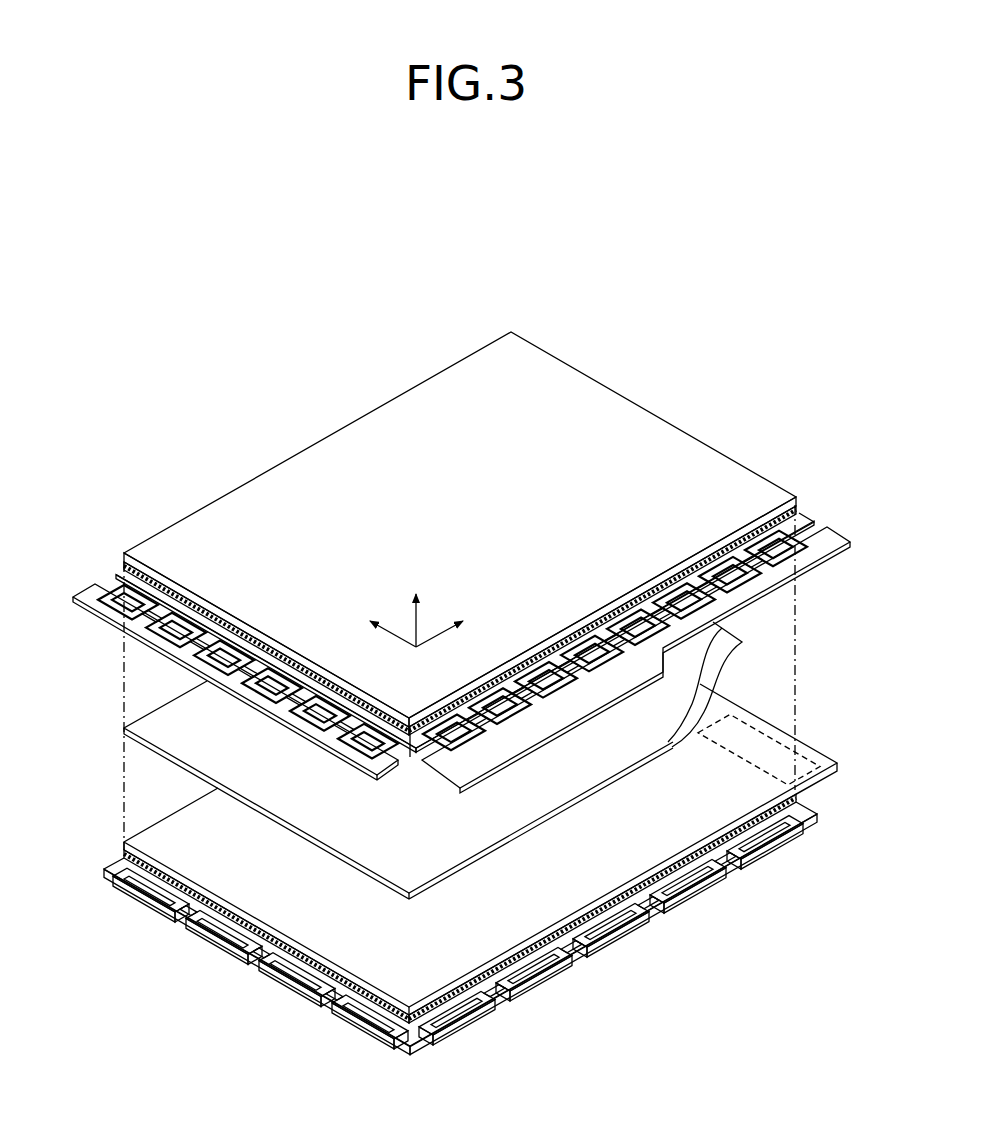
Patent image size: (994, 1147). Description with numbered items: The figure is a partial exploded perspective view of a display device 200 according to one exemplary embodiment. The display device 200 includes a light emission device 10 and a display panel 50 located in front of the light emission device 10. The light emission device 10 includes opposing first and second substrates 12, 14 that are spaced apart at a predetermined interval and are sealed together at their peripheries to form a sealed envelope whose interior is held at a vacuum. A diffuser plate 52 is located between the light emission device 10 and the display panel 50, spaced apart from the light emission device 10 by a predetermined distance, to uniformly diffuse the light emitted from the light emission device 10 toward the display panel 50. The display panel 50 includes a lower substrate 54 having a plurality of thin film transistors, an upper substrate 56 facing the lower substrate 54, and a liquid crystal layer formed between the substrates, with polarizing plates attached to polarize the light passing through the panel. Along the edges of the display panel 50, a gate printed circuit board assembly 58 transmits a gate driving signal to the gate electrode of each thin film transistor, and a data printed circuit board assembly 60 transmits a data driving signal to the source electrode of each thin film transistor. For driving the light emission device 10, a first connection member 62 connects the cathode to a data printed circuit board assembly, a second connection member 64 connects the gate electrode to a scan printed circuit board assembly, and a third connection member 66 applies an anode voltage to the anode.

The display device 200 is at (428, 284).
The display panel 50 is at (460, 533).
The upper substrate 56 is at (598, 400).
The lower substrate 54 is at (799, 520).
The gate printed circuit board assembly 58 is at (86, 592).
The data printed circuit board assembly 60 is at (649, 634).
The third connection member 66 is at (768, 704).
The diffuser plate 52 is at (170, 718).
The light emission device 10 is at (476, 869).
The second substrate 14 is at (812, 756).
The first substrate 12 is at (496, 916).
The first connection member 62 is at (584, 956).
The second connection member 64 is at (244, 955).